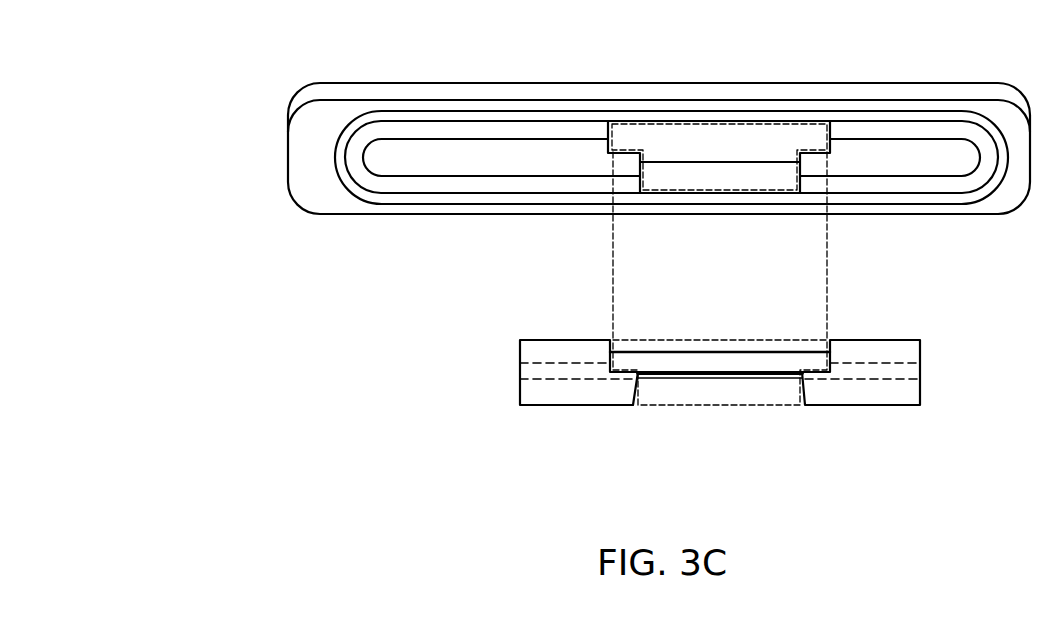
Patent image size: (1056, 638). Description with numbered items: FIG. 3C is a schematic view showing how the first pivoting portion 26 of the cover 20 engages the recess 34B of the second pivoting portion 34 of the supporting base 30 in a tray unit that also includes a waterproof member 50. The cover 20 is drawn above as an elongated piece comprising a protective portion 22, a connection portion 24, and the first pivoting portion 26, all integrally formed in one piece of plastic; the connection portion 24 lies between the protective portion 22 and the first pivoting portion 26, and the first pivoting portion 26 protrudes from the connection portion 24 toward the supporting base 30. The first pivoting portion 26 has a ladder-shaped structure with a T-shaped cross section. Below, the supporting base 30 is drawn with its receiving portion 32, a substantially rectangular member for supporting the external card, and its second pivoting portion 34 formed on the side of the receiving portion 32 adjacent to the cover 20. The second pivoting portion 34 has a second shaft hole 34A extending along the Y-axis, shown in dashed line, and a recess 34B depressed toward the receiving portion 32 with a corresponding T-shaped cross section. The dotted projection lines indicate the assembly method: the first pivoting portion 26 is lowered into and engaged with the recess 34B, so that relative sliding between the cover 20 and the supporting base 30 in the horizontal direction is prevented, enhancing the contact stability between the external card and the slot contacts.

The cover 20 is at (625, 180).
The protective portion 22 is at (258, 72).
The connection portion 24 is at (422, 161).
The first pivoting portion 26 is at (720, 138).
The supporting base 30 is at (704, 368).
The receiving portion 32 is at (718, 362).
The second pivoting portion 34 is at (535, 354).
The second shaft hole 34A is at (520, 372).
The recess 34B is at (722, 388).
The waterproof member 50 is at (338, 158).